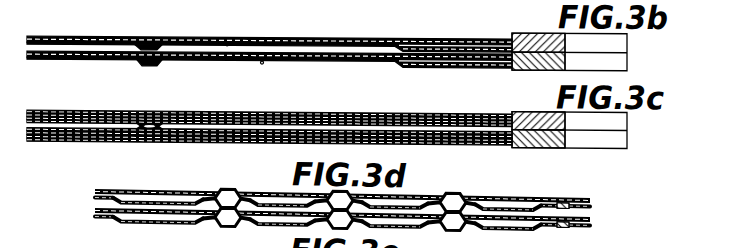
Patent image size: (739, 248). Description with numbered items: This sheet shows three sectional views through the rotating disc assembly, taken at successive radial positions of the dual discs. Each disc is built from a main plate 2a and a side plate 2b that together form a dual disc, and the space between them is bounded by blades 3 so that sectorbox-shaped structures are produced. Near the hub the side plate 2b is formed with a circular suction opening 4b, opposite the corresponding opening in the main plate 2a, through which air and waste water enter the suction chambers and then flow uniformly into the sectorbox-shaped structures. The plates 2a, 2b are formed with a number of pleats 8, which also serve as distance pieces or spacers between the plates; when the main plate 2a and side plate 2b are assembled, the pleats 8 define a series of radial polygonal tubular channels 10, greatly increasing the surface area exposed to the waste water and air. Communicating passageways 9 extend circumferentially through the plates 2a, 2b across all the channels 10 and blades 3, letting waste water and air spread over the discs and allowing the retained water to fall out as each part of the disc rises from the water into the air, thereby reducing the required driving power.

In FIG. 3b, the main plate 2a is at (405, 45).
In FIG. 3c, the main plate 2a is at (203, 116).
In FIG. 3d, the main plate 2a is at (500, 190).
In FIG. 3b, the side plate 2b is at (423, 49).
In FIG. 3c, the side plate 2b is at (247, 120).
In FIG. 3d, the side plate 2b is at (536, 195).
In FIG. 3c, the blade 3 is at (89, 111).
In FIG. 3d, the blade 3 is at (566, 192).
In FIG. 3b, the suction opening 4b is at (534, 35).
In FIG. 3b, the pleat 8 is at (227, 42).
In FIG. 3d, the pleat 8 is at (425, 191).
In FIG. 3b, the communicating passageway 9 is at (147, 39).
In FIG. 3c, the communicating passageway 9 is at (146, 113).
In FIG. 3d, the tubular channel 10 is at (240, 188).